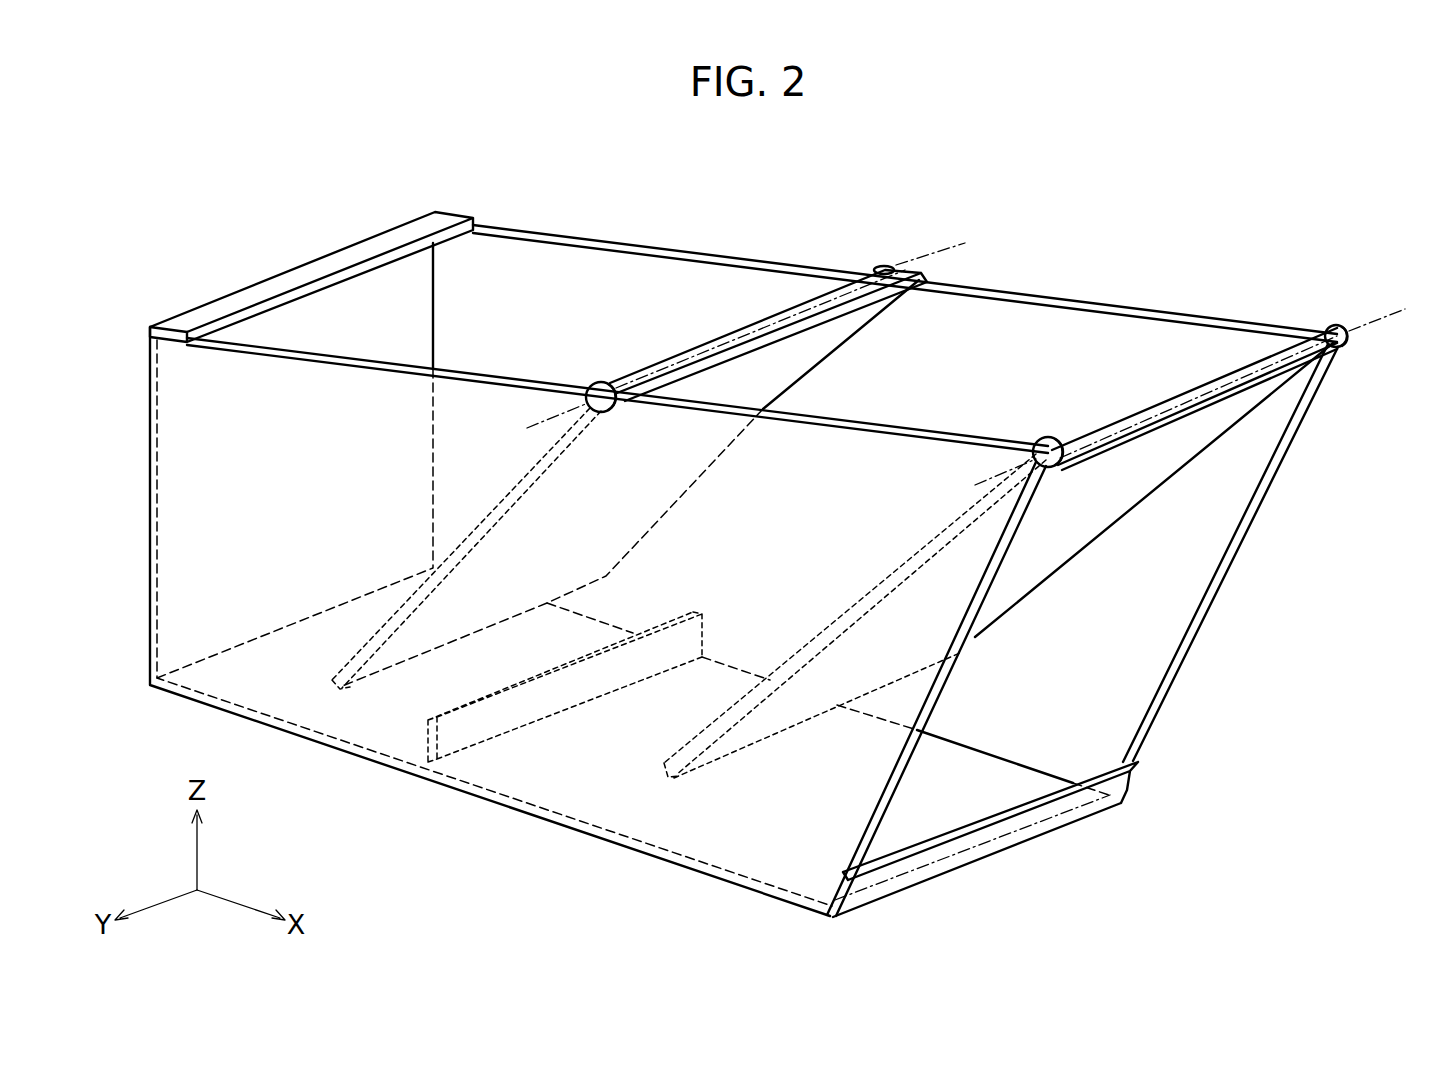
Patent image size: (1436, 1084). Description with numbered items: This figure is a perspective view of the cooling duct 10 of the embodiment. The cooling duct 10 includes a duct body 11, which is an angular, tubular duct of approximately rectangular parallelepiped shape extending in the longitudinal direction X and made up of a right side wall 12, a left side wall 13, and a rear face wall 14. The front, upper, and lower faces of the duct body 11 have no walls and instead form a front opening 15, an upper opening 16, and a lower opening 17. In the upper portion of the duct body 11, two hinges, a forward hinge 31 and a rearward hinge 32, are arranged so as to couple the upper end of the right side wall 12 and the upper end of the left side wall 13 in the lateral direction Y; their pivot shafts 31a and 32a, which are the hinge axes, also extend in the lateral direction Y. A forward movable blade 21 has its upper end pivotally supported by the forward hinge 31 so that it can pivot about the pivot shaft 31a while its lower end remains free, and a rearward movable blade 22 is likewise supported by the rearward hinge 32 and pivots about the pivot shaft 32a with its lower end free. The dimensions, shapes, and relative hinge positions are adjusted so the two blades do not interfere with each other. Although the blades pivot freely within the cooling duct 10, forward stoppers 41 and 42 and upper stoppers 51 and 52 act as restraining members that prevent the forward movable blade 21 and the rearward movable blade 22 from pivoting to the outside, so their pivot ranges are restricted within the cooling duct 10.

The cooling duct 10 is at (297, 160).
The duct body 11 is at (140, 560).
The right side wall 12 is at (507, 375).
The left side wall 13 is at (680, 250).
The rear face wall 14 is at (378, 298).
The front opening 15 is at (1189, 585).
The upper opening 16 is at (511, 251).
The lower opening 17 is at (922, 833).
The forward movable blade 21 is at (1235, 428).
The rearward movable blade 22 is at (802, 372).
The forward hinge 31 is at (1337, 322).
The pivot shaft 31a is at (1397, 306).
The rearward hinge 32 is at (885, 263).
The pivot shaft 32a is at (950, 250).
The forward stopper 41 is at (1062, 825).
The forward stopper 42 is at (487, 745).
The upper stopper 51 is at (727, 332).
The upper stopper 52 is at (458, 210).